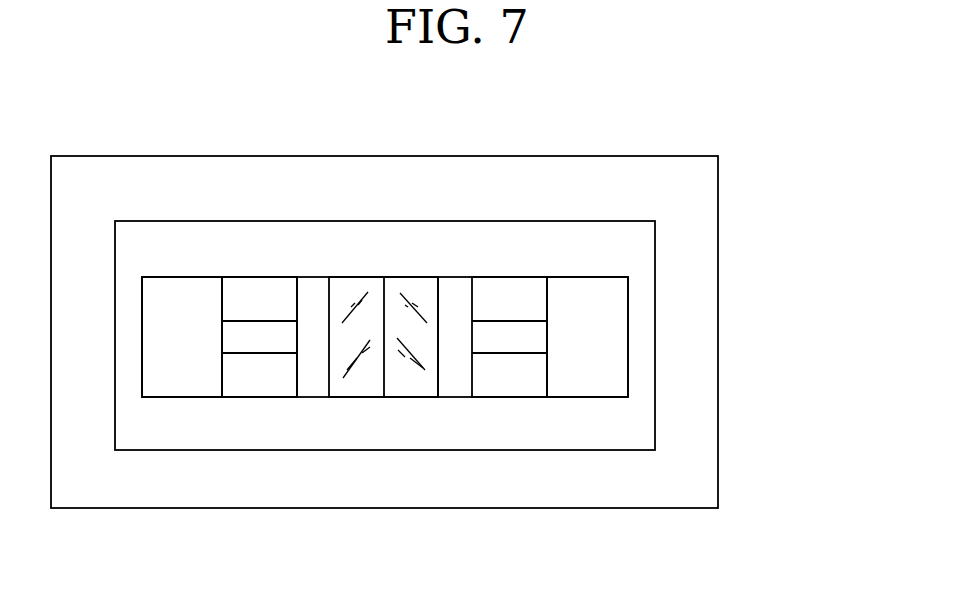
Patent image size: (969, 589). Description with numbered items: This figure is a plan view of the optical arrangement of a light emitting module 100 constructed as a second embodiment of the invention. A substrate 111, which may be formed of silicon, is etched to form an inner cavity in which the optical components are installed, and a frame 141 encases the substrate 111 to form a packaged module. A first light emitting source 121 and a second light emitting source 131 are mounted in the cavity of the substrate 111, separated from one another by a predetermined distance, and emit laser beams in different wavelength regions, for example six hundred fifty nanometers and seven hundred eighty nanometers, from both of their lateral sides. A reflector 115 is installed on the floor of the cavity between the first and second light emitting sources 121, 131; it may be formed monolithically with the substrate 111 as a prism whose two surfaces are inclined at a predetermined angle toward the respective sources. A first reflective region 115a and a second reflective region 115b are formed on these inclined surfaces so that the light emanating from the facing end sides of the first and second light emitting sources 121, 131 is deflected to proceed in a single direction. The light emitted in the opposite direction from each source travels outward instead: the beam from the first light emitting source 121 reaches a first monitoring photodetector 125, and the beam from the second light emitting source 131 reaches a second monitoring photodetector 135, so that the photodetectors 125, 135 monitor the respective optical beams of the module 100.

The light emitting module 100 is at (725, 186).
The substrate 111 is at (568, 427).
The reflector 115 is at (412, 276).
The first reflective region 115a is at (360, 378).
The second reflective region 115b is at (415, 378).
The first light emitting source 121 is at (260, 338).
The first monitoring photodetector 125 is at (180, 290).
The second light emitting source 131 is at (510, 340).
The second monitoring photodetector 135 is at (597, 292).
The frame 141 is at (718, 404).